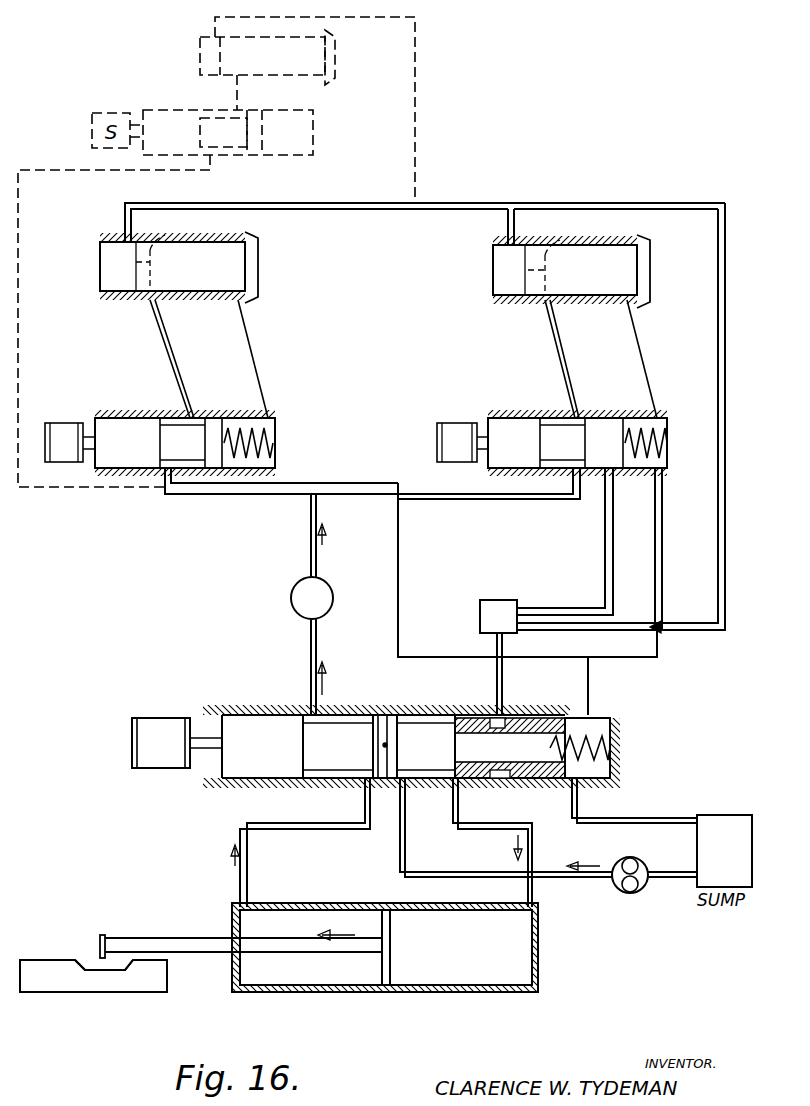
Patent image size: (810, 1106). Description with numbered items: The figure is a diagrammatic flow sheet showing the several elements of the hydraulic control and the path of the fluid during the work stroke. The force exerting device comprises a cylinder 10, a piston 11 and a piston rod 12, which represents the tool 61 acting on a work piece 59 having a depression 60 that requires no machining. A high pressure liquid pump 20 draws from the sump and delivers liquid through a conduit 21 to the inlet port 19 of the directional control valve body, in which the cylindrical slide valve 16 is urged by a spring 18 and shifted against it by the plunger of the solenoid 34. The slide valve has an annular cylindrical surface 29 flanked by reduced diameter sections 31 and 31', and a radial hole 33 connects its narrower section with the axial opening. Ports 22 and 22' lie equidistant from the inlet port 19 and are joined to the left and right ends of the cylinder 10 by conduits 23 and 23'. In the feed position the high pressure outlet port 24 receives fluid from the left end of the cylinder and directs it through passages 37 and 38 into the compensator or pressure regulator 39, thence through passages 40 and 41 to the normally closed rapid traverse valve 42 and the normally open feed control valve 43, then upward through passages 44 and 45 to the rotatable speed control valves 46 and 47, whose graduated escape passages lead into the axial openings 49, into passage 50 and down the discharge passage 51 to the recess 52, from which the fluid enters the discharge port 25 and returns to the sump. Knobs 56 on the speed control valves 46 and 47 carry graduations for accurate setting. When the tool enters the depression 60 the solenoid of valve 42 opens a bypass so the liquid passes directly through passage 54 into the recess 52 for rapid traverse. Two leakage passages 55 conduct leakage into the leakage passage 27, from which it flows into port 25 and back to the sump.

The cylinder 10 is at (330, 985).
The piston 11 is at (392, 936).
The piston rod 12 is at (199, 938).
The cylindrical slide valve 16 is at (237, 762).
The spring 18 is at (585, 741).
The inlet port 19 is at (404, 784).
The high pressure liquid pump 20 is at (618, 895).
The conduit 21 is at (432, 873).
The port 22 is at (342, 795).
The port 22' is at (484, 798).
The conduit 23 is at (300, 842).
The conduit 23' is at (519, 842).
The high pressure outlet port 24 is at (310, 700).
The discharge port 25 is at (505, 677).
The leakage passage 27 is at (592, 677).
The annular cylindrical surface 29 is at (397, 720).
The reduced diameter section 31 is at (338, 746).
The reduced diameter section 31' is at (426, 746).
The radial hole 33 is at (512, 717).
The solenoid 34 is at (177, 743).
The passage 37 is at (309, 664).
The passage 38 is at (309, 631).
The compensator or pressure regulator 39 is at (291, 594).
The passage 40 is at (310, 549).
The passage 41 is at (222, 500).
The rapid traverse valve 42 is at (552, 443).
The feed control valve 43 is at (160, 443).
The passage 44 is at (165, 346).
The passage 45 is at (554, 353).
The speed control valve 46 is at (172, 266).
The speed control valve 47 is at (571, 258).
The axial opening 49 is at (354, 255).
The passage 50 is at (345, 212).
The discharge passage 51 is at (727, 452).
The recess 52 is at (497, 605).
The passage 54 is at (605, 541).
The leakage passages 55 is at (255, 355).
The knob 56 is at (258, 281).
The work piece 59 is at (150, 985).
The depression 60 is at (93, 968).
The tool 61 is at (100, 953).